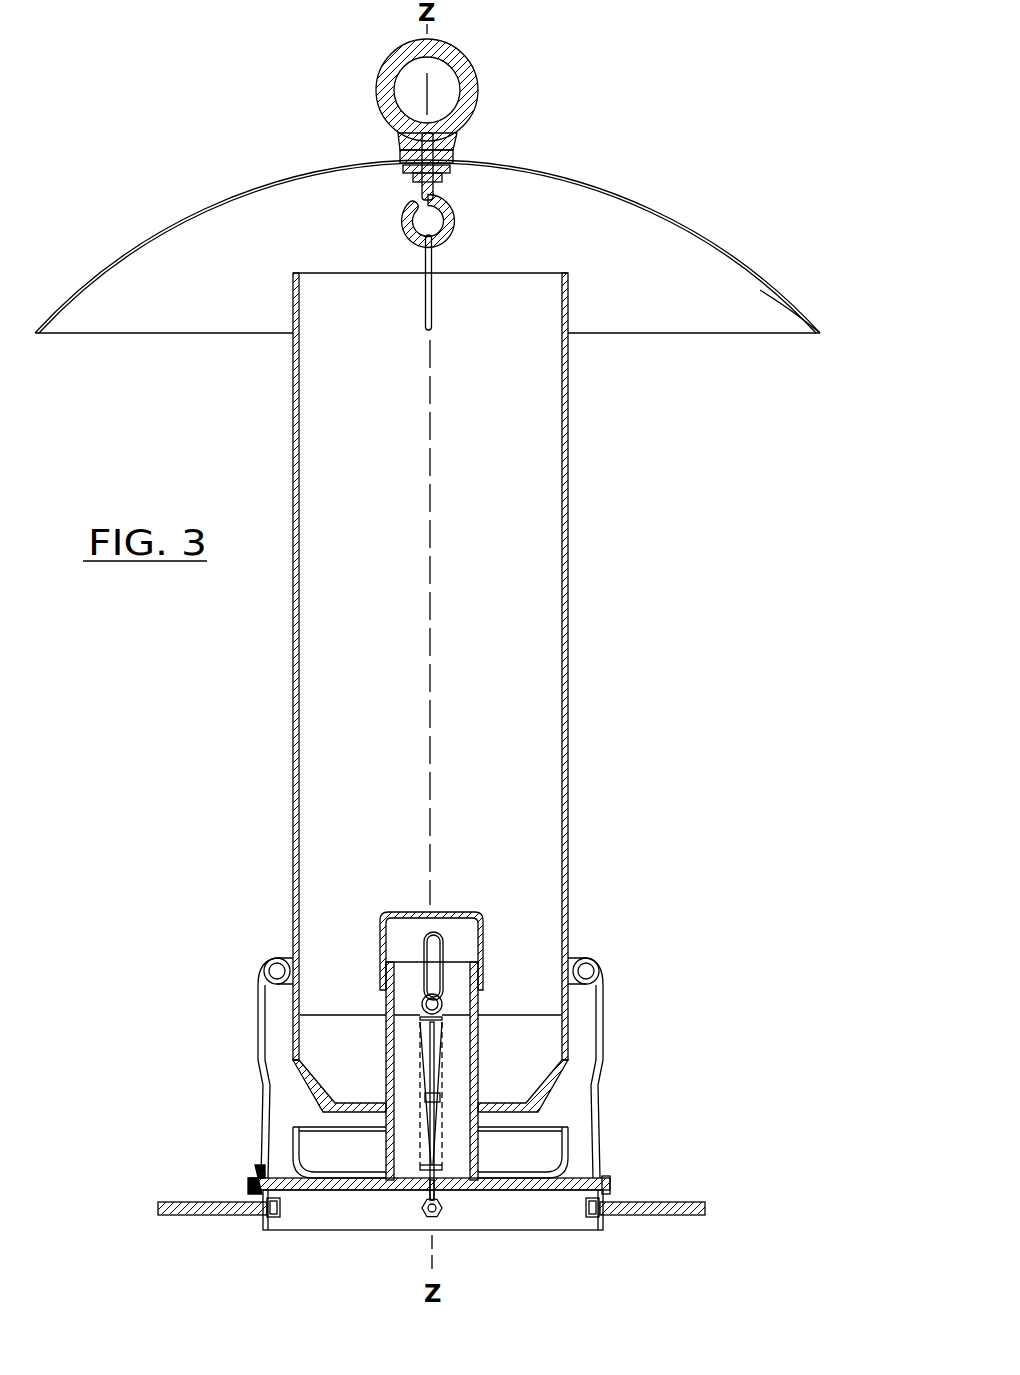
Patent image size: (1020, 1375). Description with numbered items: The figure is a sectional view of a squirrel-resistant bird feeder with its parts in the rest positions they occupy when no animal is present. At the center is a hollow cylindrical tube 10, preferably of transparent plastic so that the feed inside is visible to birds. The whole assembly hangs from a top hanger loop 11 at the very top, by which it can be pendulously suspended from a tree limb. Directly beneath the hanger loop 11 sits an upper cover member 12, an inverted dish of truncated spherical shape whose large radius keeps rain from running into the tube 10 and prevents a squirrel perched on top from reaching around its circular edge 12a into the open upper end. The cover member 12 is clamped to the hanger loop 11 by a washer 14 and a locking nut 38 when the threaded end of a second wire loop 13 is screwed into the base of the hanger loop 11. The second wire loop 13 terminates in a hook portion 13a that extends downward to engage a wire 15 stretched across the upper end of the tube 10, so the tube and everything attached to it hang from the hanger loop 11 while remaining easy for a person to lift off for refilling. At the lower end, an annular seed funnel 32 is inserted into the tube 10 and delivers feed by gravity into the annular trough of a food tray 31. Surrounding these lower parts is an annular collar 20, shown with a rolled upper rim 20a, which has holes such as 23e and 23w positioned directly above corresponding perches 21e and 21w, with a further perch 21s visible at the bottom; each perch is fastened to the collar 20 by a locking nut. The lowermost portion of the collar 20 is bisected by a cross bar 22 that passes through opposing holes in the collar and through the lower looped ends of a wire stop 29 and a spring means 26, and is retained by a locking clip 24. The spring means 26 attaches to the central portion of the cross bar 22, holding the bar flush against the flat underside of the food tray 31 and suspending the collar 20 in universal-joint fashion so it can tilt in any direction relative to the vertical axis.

The hollow cylindrical tube 10 is at (575, 643).
The top hanger loop 11 is at (378, 48).
The upper cover member 12 is at (147, 222).
The circular edge 12a is at (848, 282).
The second wire loop 13 is at (453, 197).
The hook 13a is at (407, 202).
The washer 14 is at (453, 162).
The wire 15 is at (437, 258).
The locking nut 38 is at (407, 178).
The annular collar 20 is at (250, 1017).
The rolled rim 20a is at (262, 958).
The cross bar 22 is at (615, 1170).
The hole 23e is at (260, 1085).
The hole 23w is at (607, 1100).
The locking clip 24 is at (255, 1160).
The spring means 26 is at (455, 1057).
The wire stop 29 is at (443, 927).
The annular food tray 31 is at (293, 1127).
The annular seed funnel 32 is at (565, 1078).
The perch 21e is at (219, 1225).
The perch 21w is at (647, 1225).
The perch 21s is at (420, 1222).